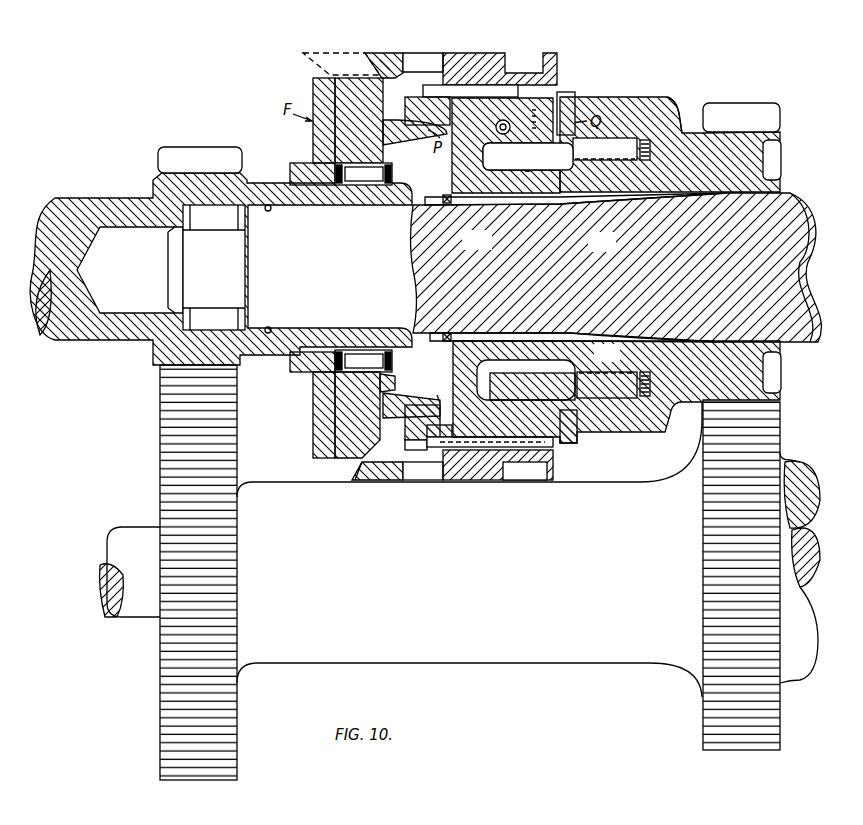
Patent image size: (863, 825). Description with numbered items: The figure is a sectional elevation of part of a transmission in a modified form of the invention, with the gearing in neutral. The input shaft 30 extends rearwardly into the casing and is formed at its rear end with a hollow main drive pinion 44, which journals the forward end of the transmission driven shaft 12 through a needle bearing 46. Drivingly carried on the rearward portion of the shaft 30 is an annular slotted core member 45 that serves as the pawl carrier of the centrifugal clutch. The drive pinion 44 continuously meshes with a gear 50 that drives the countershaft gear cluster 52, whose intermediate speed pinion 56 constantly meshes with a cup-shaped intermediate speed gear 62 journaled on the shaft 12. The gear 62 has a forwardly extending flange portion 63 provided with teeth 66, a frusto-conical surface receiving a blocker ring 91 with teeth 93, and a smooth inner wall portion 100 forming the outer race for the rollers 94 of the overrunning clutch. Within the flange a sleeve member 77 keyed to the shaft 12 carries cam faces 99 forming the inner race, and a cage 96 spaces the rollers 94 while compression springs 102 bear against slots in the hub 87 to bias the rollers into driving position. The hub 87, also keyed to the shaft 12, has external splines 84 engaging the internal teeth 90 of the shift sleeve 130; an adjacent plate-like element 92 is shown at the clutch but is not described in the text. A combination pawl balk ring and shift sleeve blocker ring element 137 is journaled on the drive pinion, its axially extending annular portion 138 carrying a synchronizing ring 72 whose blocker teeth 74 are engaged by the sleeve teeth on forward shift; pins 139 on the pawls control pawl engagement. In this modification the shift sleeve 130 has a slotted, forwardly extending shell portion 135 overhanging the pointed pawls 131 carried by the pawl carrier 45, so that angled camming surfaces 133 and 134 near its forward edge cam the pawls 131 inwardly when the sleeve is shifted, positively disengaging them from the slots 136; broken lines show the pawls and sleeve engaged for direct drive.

The transmission driven shaft 12 is at (390, 272).
The shaft 30 is at (96, 341).
The main drive pinion 44 is at (160, 162).
The annular slotted core member 45 is at (312, 152).
The needle bearing 46 is at (214, 222).
The gear 50 is at (237, 777).
The countershaft gear cluster 52 is at (477, 670).
The second or intermediate speed pinion 56 is at (703, 752).
The intermediate or second speed gear 62 is at (768, 110).
The flange portion 63 is at (673, 103).
The teeth 66 is at (600, 97).
The synchronizing and blocker ring element 72 is at (410, 420).
The blocker teeth 74 is at (405, 446).
The sleeve member 77 is at (610, 203).
The external splines or teeth 84 is at (438, 446).
The hub 87 is at (482, 205).
The internal teeth 90 is at (525, 470).
The blocker ring 91 is at (500, 136).
The plate 92 is at (465, 92).
The teeth 93 is at (572, 92).
The rollers 94 is at (615, 395).
The cage or carrier 96 is at (530, 384).
The cam faces 99 is at (622, 366).
The smooth inner wall portion 100 is at (622, 398).
The compression springs 102 is at (495, 125).
The shift sleeve 130 is at (506, 56).
The pawls 131 is at (385, 140).
The angled camming surface 133 is at (360, 480).
The angled camming surface 134 is at (396, 80).
The shell portion 135 is at (383, 56).
The slots 136 is at (425, 60).
The combination pawl balk ring and shift sleeve blocker ring element 137 is at (393, 384).
The axially extending annular portion 138 is at (438, 402).
The pins 139 is at (392, 176).